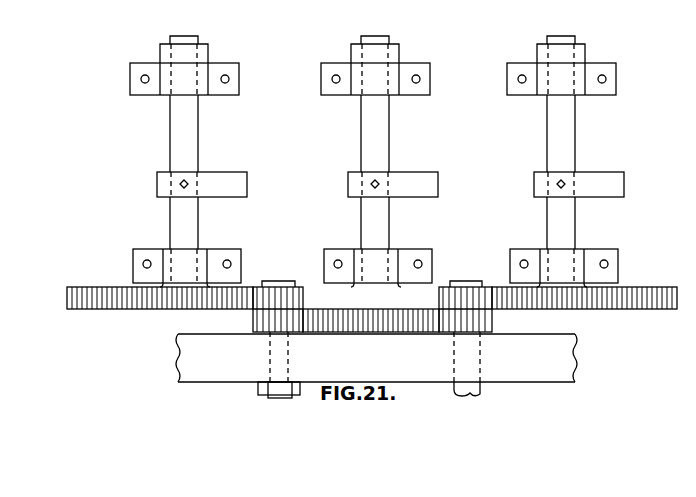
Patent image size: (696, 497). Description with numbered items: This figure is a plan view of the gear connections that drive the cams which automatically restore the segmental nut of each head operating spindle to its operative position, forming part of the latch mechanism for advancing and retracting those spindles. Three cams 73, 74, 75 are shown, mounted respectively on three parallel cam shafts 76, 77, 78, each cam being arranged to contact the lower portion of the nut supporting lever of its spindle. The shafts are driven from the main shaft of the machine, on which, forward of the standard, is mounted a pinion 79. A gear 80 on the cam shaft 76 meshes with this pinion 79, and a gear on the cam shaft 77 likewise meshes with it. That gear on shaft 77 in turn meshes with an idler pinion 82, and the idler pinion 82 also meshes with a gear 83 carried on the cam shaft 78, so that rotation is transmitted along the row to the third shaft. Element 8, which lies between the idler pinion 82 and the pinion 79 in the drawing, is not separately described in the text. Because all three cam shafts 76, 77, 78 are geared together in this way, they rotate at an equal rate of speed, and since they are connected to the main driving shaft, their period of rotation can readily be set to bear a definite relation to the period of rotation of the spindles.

The rack 8 is at (318, 305).
The cam 73 is at (593, 172).
The cam 74 is at (412, 172).
The cam 75 is at (232, 174).
The cam shaft 76 is at (563, 226).
The cam shaft 77 is at (380, 220).
The cam shaft 78 is at (194, 213).
The pinion 79 is at (493, 318).
The gear 80 is at (638, 286).
The idler pinion 82 is at (277, 288).
The gear 83 is at (93, 309).